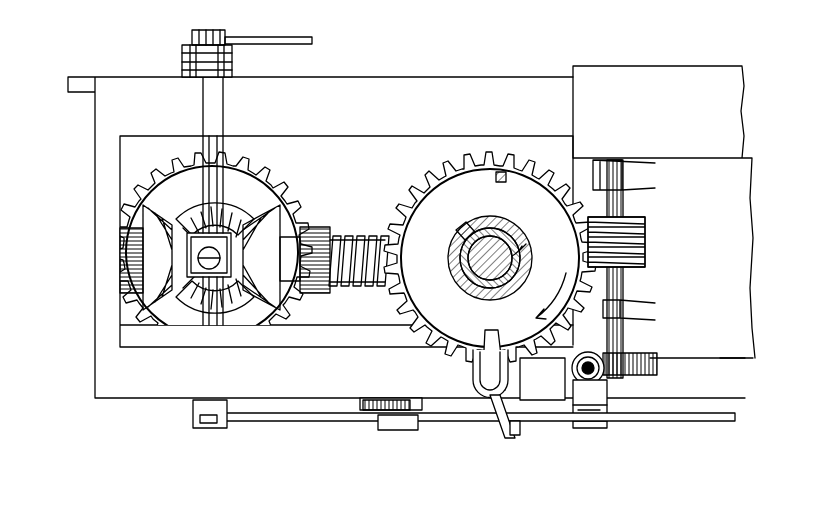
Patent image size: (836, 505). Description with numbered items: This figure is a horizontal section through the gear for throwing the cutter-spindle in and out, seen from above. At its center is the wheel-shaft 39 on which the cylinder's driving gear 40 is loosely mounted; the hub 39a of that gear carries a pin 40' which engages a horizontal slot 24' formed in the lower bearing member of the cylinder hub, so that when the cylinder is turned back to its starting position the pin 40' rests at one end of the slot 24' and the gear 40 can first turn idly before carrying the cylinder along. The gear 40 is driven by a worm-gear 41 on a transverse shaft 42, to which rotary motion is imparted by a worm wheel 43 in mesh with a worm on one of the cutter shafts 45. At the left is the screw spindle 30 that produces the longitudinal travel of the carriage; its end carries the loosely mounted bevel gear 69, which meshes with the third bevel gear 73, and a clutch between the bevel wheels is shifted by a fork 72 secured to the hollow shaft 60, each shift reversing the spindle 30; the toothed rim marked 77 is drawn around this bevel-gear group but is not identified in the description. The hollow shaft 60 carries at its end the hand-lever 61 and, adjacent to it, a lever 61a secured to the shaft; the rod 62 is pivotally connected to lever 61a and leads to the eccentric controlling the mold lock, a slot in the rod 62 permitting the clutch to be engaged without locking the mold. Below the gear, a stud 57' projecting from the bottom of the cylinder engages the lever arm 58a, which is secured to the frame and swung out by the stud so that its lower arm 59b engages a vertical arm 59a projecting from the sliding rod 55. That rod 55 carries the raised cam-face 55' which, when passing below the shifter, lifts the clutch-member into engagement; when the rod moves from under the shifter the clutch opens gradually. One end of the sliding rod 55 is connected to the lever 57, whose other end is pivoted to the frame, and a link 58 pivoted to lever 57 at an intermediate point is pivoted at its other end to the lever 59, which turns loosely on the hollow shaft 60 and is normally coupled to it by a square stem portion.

The hollow shaft 60 is at (222, 142).
The hand-lever 61 is at (182, 58).
The lever 61a is at (205, 40).
The rod 62 is at (272, 38).
The fork 72 is at (212, 252).
The gear rim 77 is at (222, 249).
The bevel gear 69 is at (125, 248).
The third bevel gear 73 is at (192, 316).
The screw spindle 30 is at (350, 240).
The driving gear 40 is at (490, 258).
The shaft 39 is at (525, 247).
The slot 24' is at (490, 244).
The hub 39a is at (462, 262).
The pin 40' is at (483, 225).
The stud 57' is at (516, 143).
The worm-gear 41 is at (648, 248).
The shaft 42 is at (625, 336).
The worm wheel 43 is at (650, 372).
The cutter shaft 45 is at (588, 358).
The raised cam-face 55' is at (602, 419).
The lever arm 58a is at (487, 336).
The lower arm 59b is at (513, 398).
The link 58 is at (341, 421).
The sliding rod 55 is at (490, 427).
The vertical arm 59a is at (520, 436).
The lever 59 is at (195, 420).
The lever 57 is at (391, 433).